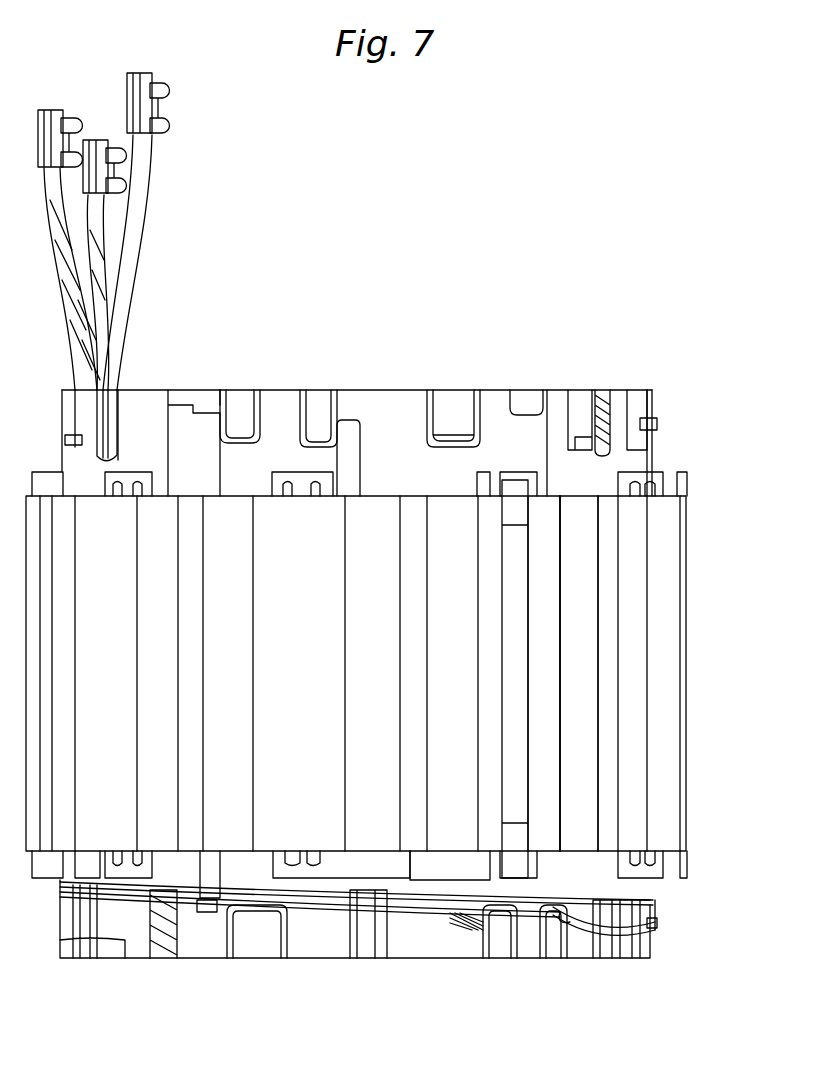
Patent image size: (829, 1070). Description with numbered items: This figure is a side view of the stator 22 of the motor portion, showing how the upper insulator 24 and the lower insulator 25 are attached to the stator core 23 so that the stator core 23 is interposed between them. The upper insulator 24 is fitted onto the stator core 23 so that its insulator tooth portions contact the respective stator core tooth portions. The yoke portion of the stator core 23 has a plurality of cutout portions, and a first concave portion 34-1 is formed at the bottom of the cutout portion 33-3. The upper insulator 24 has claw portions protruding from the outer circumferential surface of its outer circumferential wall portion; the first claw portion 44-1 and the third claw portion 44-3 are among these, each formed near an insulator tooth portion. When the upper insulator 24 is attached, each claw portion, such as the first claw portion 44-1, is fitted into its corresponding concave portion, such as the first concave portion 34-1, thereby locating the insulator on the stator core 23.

The stator 22 is at (626, 291).
The stator core 23 is at (688, 640).
The upper insulator 24 is at (384, 390).
The lower insulator 25 is at (405, 965).
The cutout portion 33-3 is at (561, 595).
The first concave portion 34-1 is at (529, 553).
The first claw portion 44-1 is at (512, 470).
The third claw portion 44-3 is at (518, 879).